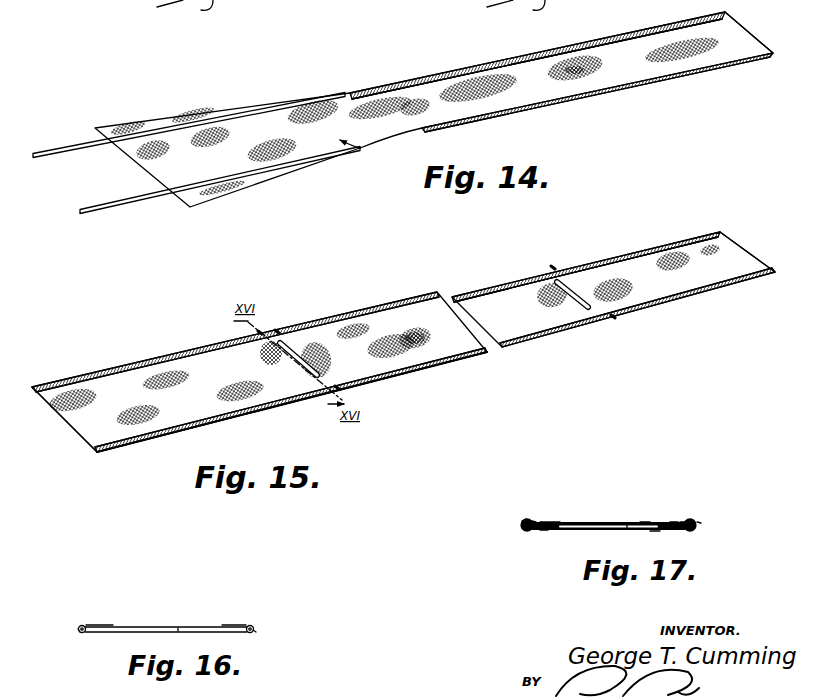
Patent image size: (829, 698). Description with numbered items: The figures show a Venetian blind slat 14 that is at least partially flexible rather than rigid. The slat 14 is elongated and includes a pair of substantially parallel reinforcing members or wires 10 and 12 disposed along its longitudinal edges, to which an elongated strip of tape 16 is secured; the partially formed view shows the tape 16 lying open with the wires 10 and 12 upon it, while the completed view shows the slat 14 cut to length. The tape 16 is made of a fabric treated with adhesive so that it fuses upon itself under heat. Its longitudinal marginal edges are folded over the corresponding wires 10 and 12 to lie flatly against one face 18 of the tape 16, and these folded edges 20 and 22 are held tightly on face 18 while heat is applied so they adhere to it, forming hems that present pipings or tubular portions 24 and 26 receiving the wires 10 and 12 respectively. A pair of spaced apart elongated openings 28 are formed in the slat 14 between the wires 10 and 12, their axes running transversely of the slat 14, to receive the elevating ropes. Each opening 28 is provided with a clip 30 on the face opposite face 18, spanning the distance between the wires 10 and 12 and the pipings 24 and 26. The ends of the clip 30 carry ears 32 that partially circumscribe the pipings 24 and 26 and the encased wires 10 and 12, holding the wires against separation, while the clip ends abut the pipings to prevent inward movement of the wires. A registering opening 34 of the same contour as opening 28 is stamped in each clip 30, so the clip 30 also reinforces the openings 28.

In FIG. 14, the reinforcing member 10 is at (66, 151).
In FIG. 16, the reinforcing member 10 is at (82, 625).
In FIG. 17, the reinforcing member 10 is at (522, 529).
In FIG. 14, the reinforcing member 12 is at (113, 206).
In FIG. 15, the reinforcing member 12 is at (97, 453).
In FIG. 16, the reinforcing member 12 is at (256, 628).
In FIG. 17, the reinforcing member 12 is at (700, 525).
In FIG. 14, the slat 14 is at (434, 109).
In FIG. 15, the slat 14 is at (403, 342).
In FIG. 14, the tape 16 is at (555, 81).
In FIG. 15, the tape 16 is at (430, 333).
In FIG. 16, the tape 16 is at (166, 621).
In FIG. 17, the tape 16 is at (608, 518).
In FIG. 14, the face 18 is at (360, 148).
In FIG. 15, the face 18 is at (32, 390).
In FIG. 16, the face 18 is at (178, 629).
In FIG. 17, the face 18 is at (627, 522).
In FIG. 14, the folded edge 20 is at (630, 38).
In FIG. 15, the folded edge 20 is at (651, 253).
In FIG. 16, the folded edge 20 is at (113, 628).
In FIG. 17, the folded edge 20 is at (552, 522).
In FIG. 14, the folded edge 22 is at (722, 60).
In FIG. 15, the folded edge 22 is at (760, 270).
In FIG. 16, the folded edge 22 is at (243, 626).
In FIG. 17, the folded edge 22 is at (673, 521).
In FIG. 14, the piping 24 is at (663, 26).
In FIG. 15, the piping 24 is at (714, 230).
In FIG. 16, the piping 24 is at (80, 633).
In FIG. 17, the piping 24 is at (522, 521).
In FIG. 14, the piping 26 is at (737, 61).
In FIG. 15, the piping 26 is at (740, 287).
In FIG. 16, the piping 26 is at (257, 632).
In FIG. 17, the piping 26 is at (682, 521).
In FIG. 15, the elongated opening 28 is at (321, 372).
In FIG. 17, the elongated opening 28 is at (641, 522).
In FIG. 17, the clip 30 is at (543, 531).
In FIG. 15, the ear 32 is at (278, 330).
In FIG. 17, the ear 32 is at (531, 521).
In FIG. 17, the registering opening 34 is at (653, 533).